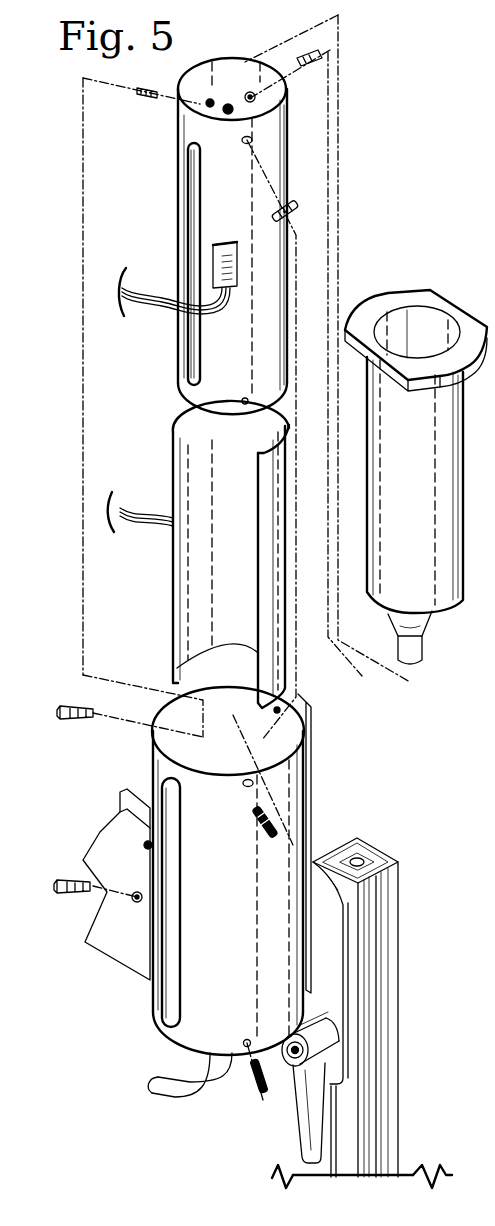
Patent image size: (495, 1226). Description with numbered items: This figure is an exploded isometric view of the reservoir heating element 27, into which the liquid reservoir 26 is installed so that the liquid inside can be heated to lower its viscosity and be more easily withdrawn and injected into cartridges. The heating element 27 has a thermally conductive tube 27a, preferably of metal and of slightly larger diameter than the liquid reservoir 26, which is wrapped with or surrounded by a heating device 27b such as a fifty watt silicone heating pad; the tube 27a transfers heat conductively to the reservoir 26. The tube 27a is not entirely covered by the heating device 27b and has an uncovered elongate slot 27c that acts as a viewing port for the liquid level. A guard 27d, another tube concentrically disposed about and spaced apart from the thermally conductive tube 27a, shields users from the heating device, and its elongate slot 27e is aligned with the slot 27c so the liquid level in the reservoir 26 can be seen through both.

The liquid reservoir 26 is at (419, 497).
The reservoir heating element 27 is at (143, 380).
The thermally conductive tube 27a is at (249, 218).
The heating device 27b is at (254, 449).
The elongate slot 27c is at (193, 238).
The guard 27d is at (241, 913).
The elongate slot 27e is at (171, 936).